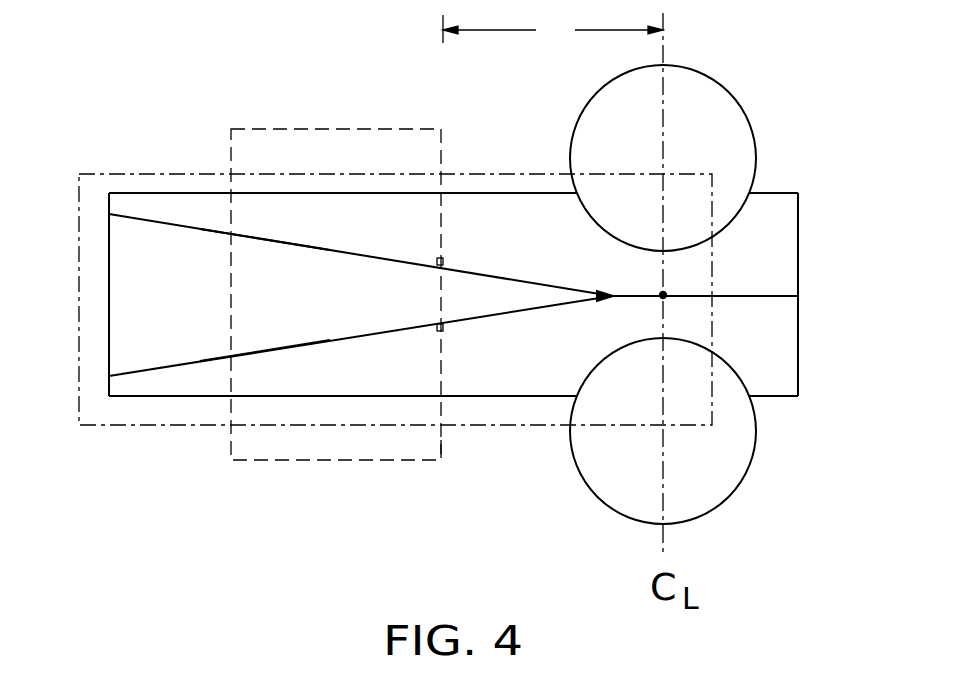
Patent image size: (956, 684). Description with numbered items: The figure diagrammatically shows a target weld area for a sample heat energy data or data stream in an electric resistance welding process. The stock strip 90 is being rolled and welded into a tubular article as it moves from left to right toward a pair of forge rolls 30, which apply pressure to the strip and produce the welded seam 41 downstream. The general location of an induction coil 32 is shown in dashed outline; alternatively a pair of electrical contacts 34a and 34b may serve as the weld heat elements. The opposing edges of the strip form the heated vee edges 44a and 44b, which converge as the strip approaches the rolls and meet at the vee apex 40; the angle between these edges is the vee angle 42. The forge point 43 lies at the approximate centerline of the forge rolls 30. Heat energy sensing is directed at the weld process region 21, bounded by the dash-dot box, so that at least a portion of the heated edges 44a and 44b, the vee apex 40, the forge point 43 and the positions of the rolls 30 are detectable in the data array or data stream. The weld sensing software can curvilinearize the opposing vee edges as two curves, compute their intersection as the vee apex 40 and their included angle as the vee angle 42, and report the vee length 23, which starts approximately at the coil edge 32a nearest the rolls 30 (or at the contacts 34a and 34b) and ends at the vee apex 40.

The weld process region 21 is at (395, 386).
The vee length 23 is at (553, 29).
The forge rolls 30 is at (678, 167).
The induction coil 32 is at (357, 129).
The edge of the induction coil 32a is at (441, 470).
The electrical contact 34a is at (438, 265).
The electrical contact 34b is at (438, 324).
The vee apex 40 is at (608, 298).
The welded seam 41 is at (736, 296).
The vee angle 42 is at (453, 295).
The forge point 43 is at (663, 295).
The vee edge 44a is at (270, 243).
The vee edge 44b is at (271, 346).
The stock strip 90 is at (178, 308).